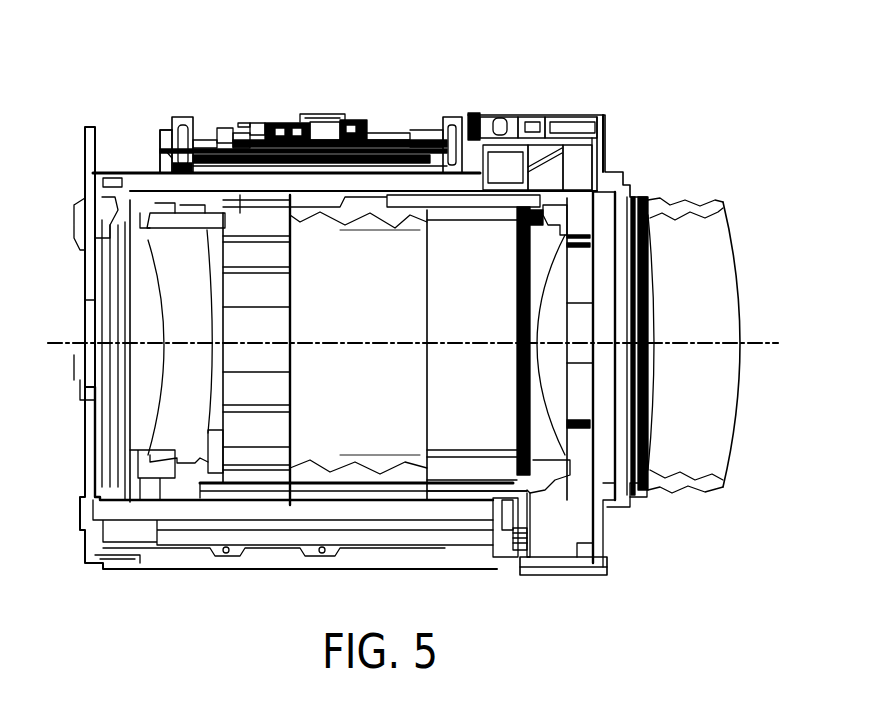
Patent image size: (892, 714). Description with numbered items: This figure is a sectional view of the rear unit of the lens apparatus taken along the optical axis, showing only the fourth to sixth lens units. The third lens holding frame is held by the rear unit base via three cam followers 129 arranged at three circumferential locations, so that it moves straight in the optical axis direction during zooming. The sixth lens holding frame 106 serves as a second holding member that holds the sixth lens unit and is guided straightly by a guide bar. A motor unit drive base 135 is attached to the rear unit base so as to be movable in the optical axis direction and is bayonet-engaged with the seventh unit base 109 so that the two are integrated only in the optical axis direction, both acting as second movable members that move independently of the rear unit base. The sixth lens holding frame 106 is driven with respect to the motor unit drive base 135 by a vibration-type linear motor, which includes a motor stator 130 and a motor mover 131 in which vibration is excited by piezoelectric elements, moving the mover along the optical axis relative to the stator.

The motor unit drive base 135 is at (168, 160).
The motor stator 130 is at (182, 103).
The cam followers 129 is at (268, 103).
The motor mover 131 is at (322, 113).
The sixth lens holding frame 106 is at (482, 192).
The seventh unit base 109 is at (543, 130).